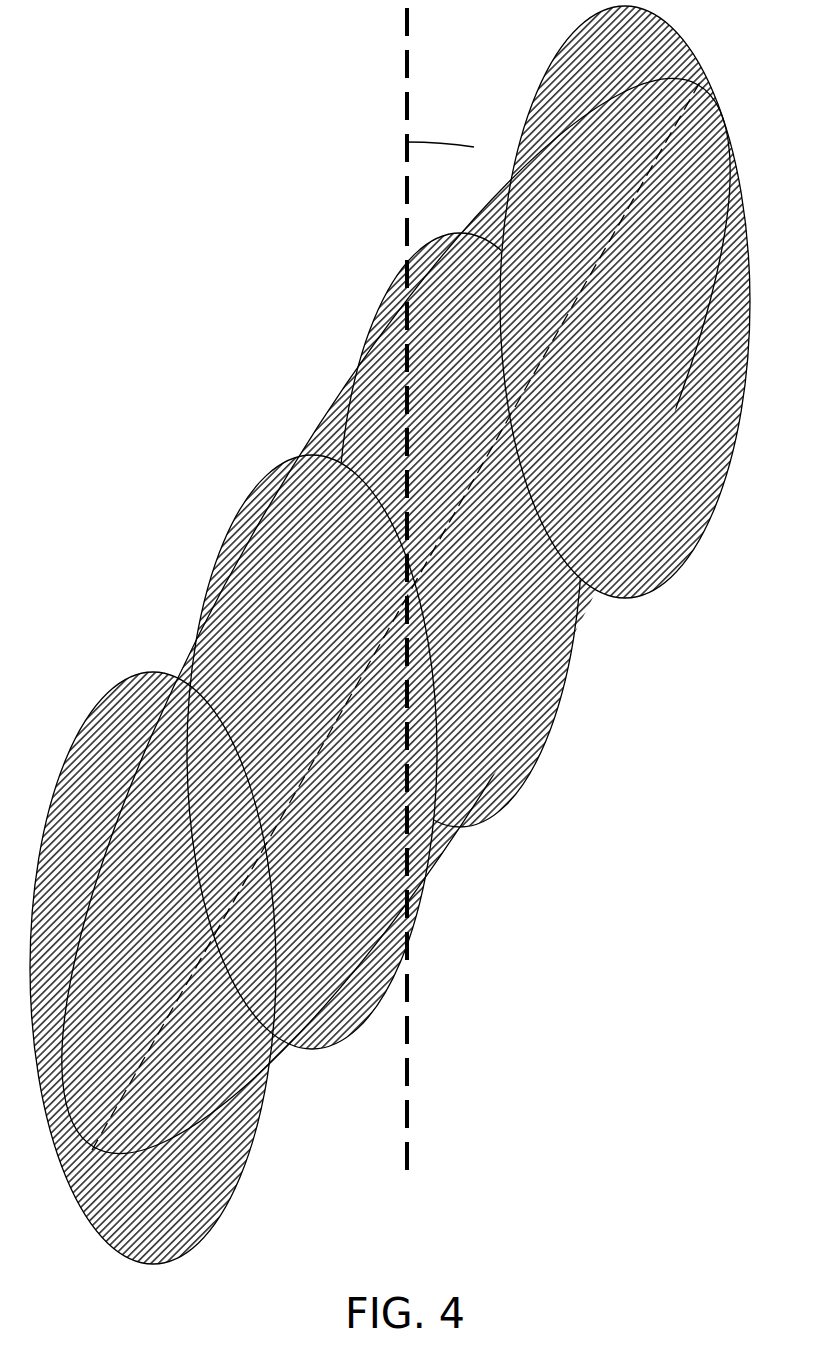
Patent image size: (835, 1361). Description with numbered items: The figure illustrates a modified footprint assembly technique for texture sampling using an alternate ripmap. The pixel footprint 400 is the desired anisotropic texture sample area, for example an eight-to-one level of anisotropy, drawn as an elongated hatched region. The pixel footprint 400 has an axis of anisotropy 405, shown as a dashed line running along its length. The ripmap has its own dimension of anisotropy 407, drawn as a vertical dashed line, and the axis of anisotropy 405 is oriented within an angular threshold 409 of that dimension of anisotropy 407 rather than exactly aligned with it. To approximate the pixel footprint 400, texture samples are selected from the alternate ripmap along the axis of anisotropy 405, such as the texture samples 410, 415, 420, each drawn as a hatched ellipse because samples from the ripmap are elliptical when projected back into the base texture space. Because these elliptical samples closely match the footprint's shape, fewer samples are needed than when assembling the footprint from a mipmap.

The pixel footprint 400 is at (447, 847).
The axis of anisotropy 405 is at (183, 993).
The dimension of anisotropy of the ripmap 407 is at (405, 62).
The angular threshold 409 is at (511, 185).
The texture sample 410 is at (153, 968).
The texture sample 415 is at (312, 752).
The texture sample 420 is at (460, 530).